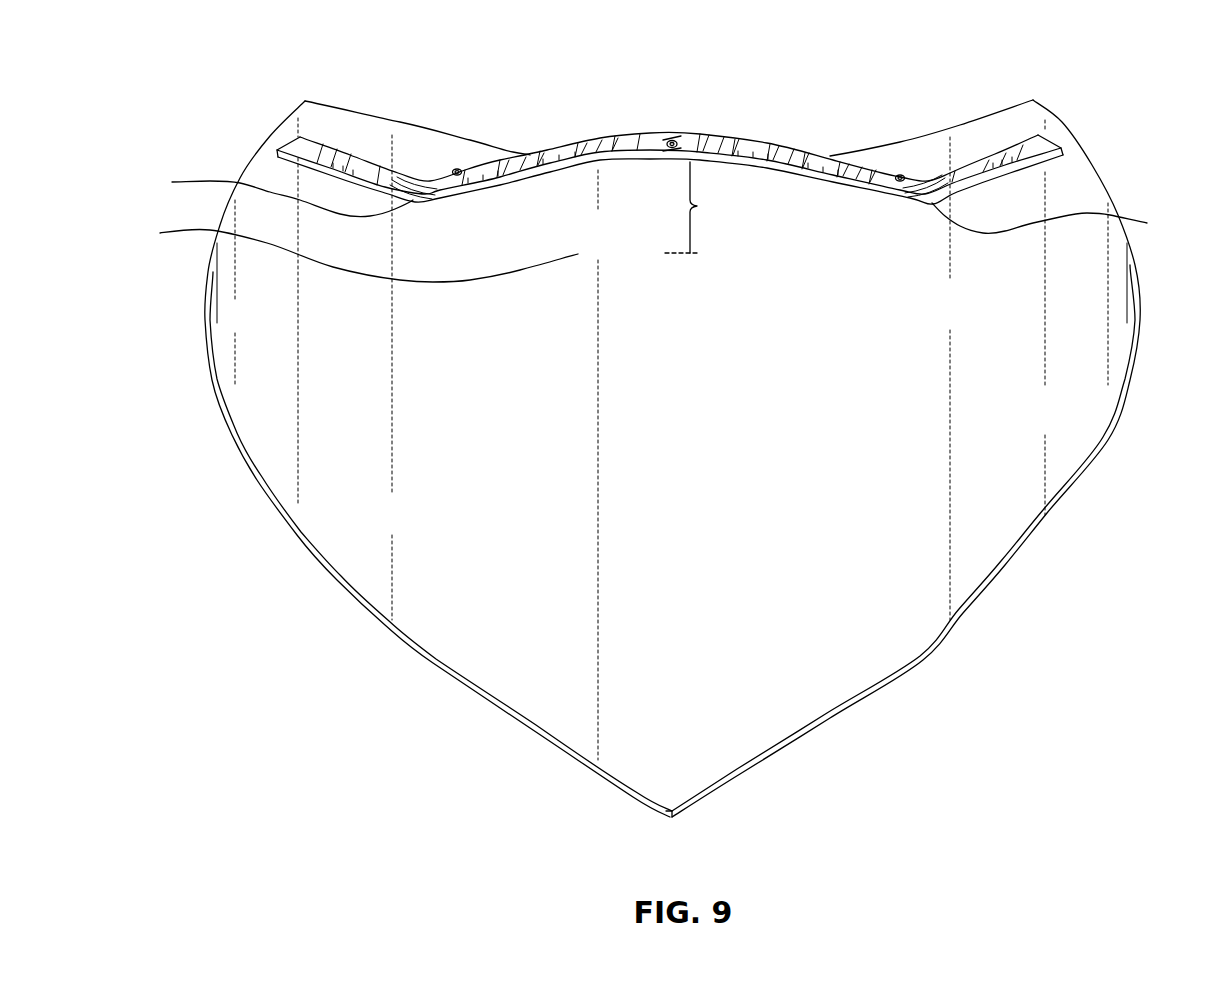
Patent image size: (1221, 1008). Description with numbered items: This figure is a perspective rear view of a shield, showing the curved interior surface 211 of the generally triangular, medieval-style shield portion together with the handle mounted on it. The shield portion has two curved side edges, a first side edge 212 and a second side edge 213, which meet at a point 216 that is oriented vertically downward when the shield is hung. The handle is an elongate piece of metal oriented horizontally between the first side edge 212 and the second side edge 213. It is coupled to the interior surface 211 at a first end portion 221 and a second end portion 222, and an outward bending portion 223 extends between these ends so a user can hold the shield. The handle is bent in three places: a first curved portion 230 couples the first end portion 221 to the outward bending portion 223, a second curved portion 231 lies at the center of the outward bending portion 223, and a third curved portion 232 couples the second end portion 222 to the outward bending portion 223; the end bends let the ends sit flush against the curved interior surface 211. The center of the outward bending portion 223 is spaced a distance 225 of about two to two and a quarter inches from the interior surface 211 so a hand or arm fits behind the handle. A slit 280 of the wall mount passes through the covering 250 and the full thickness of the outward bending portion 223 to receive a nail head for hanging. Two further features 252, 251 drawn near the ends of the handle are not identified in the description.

The interior surface 211 is at (341, 253).
The first side edge 212 is at (437, 670).
The second side edge 213 is at (913, 673).
The point 216 is at (674, 818).
The first end portion 221 is at (1013, 148).
The second end portion 222 is at (332, 148).
The outward bending portion 223 is at (716, 135).
The distance 225 is at (711, 207).
The first curved portion 230 is at (1066, 228).
The second curved portion 231 is at (668, 140).
The third curved portion 232 is at (266, 194).
The covering 250 is at (537, 150).
The right fastener 251 is at (898, 172).
The left fastener 252 is at (456, 168).
The slit 280 is at (663, 148).